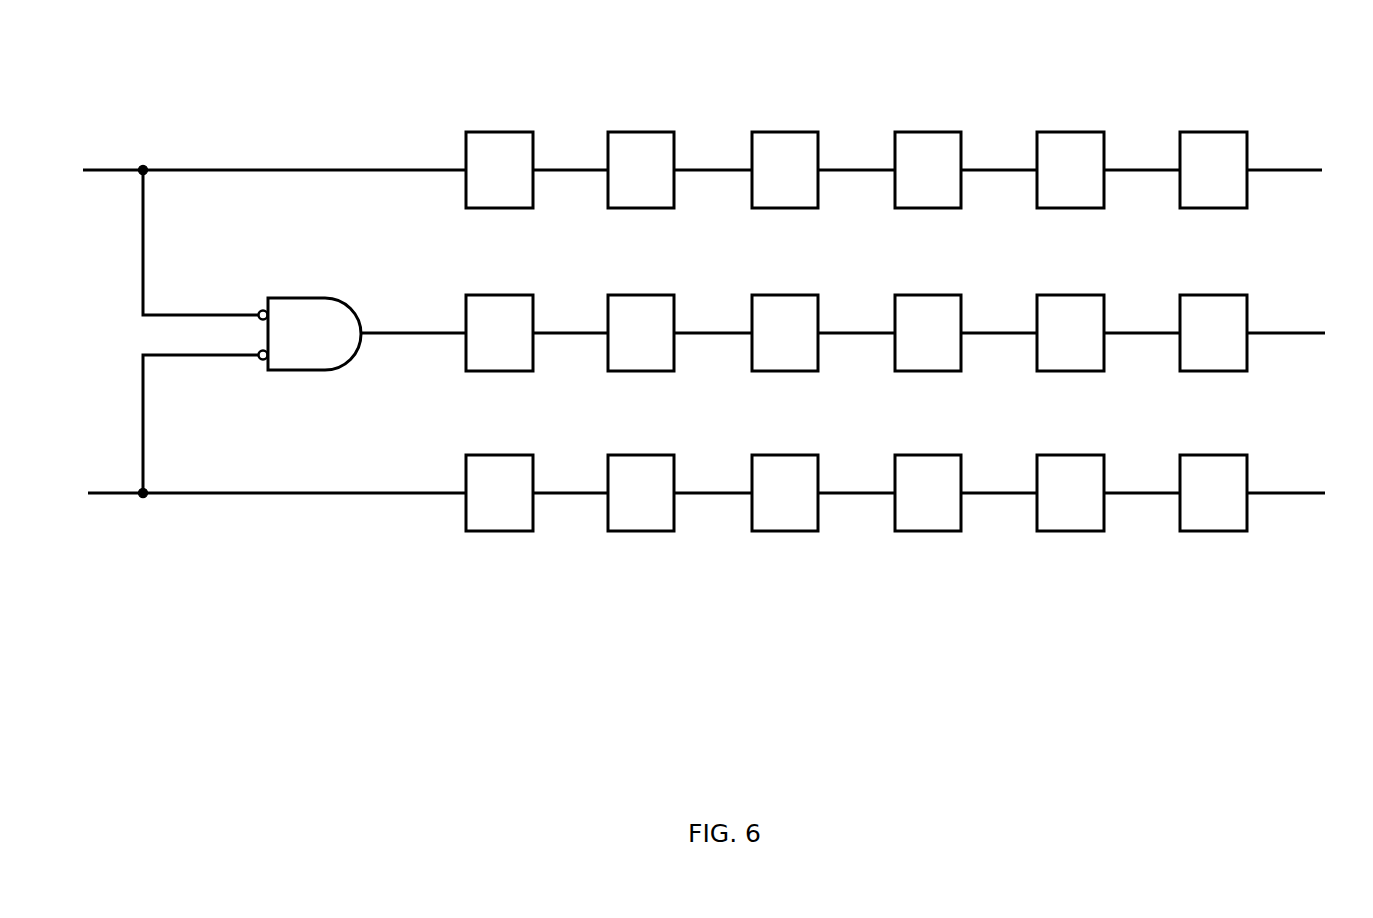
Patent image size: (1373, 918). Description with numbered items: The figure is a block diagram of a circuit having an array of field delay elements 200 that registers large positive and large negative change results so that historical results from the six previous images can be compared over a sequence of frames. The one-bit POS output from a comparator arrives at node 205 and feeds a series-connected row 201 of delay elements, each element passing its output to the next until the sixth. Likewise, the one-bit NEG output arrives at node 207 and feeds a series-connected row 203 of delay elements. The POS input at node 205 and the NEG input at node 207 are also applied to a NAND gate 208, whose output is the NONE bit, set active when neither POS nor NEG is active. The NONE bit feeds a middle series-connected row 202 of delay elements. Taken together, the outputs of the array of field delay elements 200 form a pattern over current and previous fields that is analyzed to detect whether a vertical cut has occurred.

The series of field delay elements 200 is at (1277, 83).
The series-connected row of delay elements 201 is at (1304, 170).
The series-connected row of delay elements 202 is at (1306, 332).
The series-connected row of delay elements 203 is at (1306, 491).
The node 205 is at (146, 168).
The node 207 is at (146, 496).
The NAND gate 208 is at (313, 297).